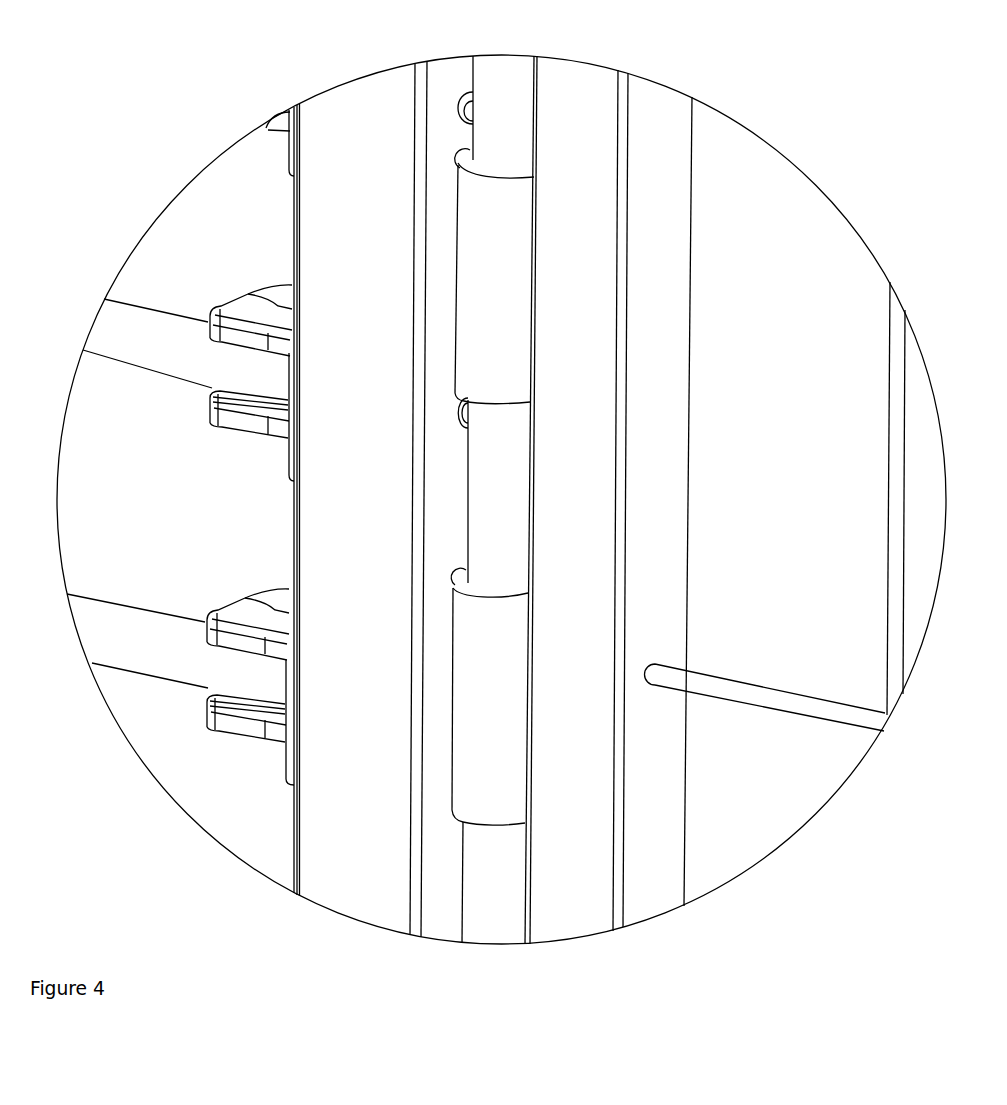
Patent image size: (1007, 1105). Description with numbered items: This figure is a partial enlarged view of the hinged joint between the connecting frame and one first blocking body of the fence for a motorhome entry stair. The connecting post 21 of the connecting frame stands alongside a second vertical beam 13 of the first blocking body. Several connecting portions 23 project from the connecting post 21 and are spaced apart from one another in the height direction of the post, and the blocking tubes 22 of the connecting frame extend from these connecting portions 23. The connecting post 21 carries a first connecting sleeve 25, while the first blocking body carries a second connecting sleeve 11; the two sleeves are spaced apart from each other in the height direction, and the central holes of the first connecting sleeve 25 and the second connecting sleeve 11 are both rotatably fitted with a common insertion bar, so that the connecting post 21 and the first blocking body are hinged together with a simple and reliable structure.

The second connecting sleeve 11 is at (502, 228).
The second vertical beam 13 is at (580, 217).
The connecting post 21 is at (378, 232).
The blocking tube 22 is at (138, 335).
The connecting portion 23 is at (262, 318).
The first connecting sleeve 25 is at (482, 673).